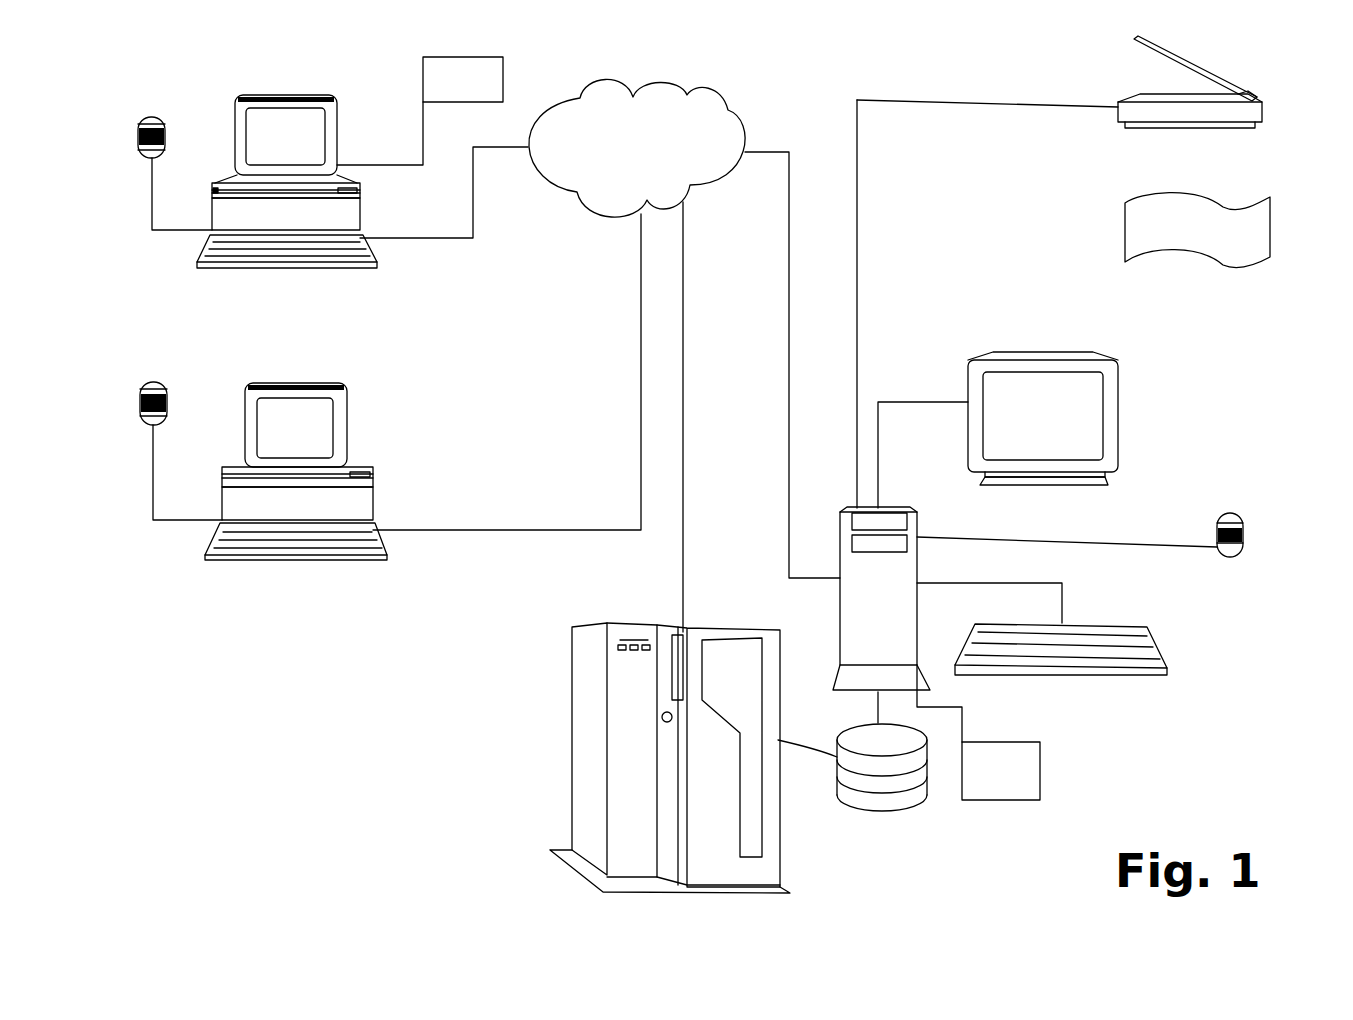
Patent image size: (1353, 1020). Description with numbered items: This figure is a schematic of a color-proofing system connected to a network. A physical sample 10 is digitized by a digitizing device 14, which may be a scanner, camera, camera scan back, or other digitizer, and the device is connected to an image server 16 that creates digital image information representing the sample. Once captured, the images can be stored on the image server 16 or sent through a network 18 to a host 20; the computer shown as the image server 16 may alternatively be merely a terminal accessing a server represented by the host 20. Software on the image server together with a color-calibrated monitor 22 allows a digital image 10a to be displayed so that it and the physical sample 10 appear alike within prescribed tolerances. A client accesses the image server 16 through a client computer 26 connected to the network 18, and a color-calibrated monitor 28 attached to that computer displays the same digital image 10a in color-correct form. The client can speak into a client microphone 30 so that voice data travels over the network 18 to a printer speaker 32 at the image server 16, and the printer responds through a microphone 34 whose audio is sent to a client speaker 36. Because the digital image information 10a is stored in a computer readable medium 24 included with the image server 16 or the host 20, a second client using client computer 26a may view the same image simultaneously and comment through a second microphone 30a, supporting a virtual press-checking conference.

The physical sample 10 is at (1272, 213).
The digital image 10a is at (285, 123).
The digitizing device 14 is at (1262, 102).
The image server 16 is at (842, 675).
The network 18 is at (633, 97).
The host 20 is at (778, 785).
The color-calibrated monitor 22 is at (1118, 412).
The computer readable medium 24 is at (887, 810).
The client computer 26 is at (362, 210).
The client computer 26a is at (373, 508).
The color-calibrated monitor 28 is at (338, 130).
The client microphone 30 is at (165, 120).
The microphone 30a is at (167, 397).
The printer speaker 32 is at (1002, 740).
The microphone 34 is at (1243, 533).
The client speaker 36 is at (452, 57).